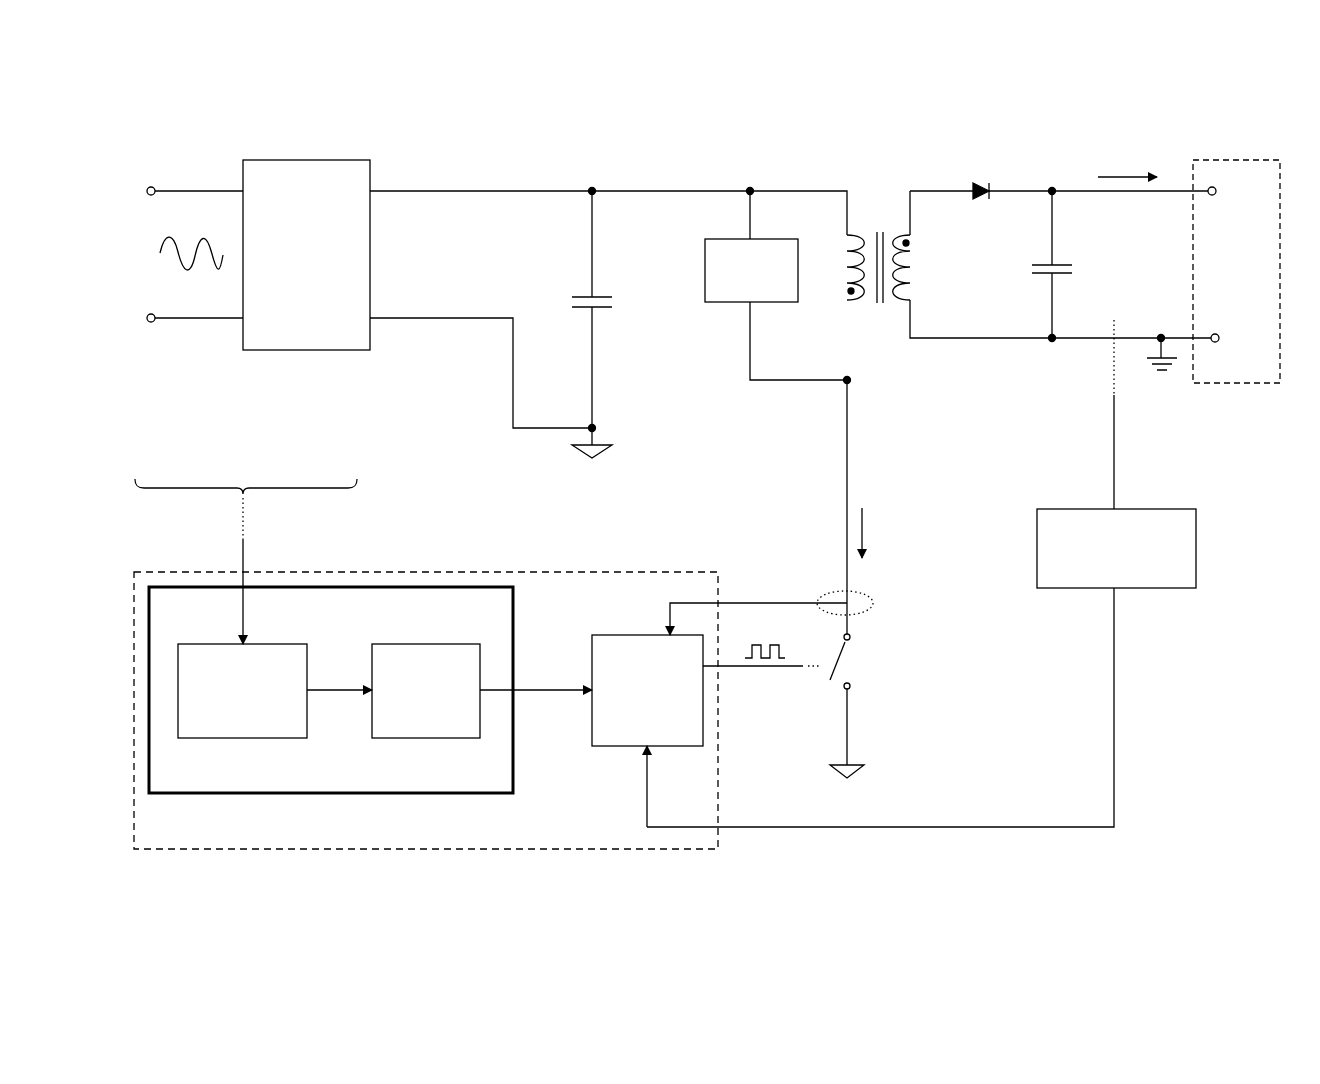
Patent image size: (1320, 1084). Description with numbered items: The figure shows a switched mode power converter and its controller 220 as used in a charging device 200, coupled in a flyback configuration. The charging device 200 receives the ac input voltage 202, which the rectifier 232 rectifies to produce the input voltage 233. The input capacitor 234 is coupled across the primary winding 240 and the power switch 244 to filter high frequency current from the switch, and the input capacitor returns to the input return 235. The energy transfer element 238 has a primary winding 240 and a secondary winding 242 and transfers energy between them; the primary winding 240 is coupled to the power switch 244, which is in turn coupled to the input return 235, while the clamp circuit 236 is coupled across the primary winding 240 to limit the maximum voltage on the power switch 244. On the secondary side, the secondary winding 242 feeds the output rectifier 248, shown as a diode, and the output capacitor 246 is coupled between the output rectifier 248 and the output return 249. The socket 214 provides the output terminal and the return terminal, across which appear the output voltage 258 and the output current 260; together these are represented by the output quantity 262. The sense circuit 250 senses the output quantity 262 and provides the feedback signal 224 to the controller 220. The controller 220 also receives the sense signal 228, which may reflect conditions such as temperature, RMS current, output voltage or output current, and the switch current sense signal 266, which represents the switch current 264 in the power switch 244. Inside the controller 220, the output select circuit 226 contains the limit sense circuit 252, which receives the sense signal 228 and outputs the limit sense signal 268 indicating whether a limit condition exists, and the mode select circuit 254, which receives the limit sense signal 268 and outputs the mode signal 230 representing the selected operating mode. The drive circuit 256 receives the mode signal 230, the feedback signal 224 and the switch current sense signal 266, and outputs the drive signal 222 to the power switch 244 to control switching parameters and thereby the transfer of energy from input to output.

The charging device 200 is at (801, 107).
The ac input voltage V_AC 202 is at (130, 232).
The socket 214 is at (1256, 152).
The controller 220 is at (364, 854).
The drive signal U_DRIVE 222 is at (778, 724).
The feedback signal U_FB 224 is at (1172, 692).
The output select circuit 226 is at (378, 586).
The sense signal U_SENSE 228 is at (146, 534).
The mode signal U_M 230 is at (542, 700).
The rectifier 232 is at (288, 152).
The input voltage V_IN 233 is at (439, 256).
The input capacitor C_IN 234 is at (638, 287).
The input return 235 is at (612, 437).
The clamp circuit 236 is at (768, 310).
The energy transfer element T1 238 is at (878, 330).
The primary winding 240 is at (856, 264).
The secondary winding 242 is at (906, 272).
The power switch S1 244 is at (880, 648).
The output capacitor C1 246 is at (1023, 284).
The output rectifier D1 248 is at (976, 172).
The output return 249 is at (1165, 376).
The sense circuit 250 is at (1199, 546).
The limit sense circuit 252 is at (278, 638).
The mode select circuit 254 is at (430, 638).
The drive circuit 256 is at (632, 630).
The output voltage V_O 258 is at (1100, 250).
The output current I_O 260 is at (1122, 140).
The output quantity U_O 262 is at (1066, 412).
The switch current I_D 264 is at (885, 512).
The switch current sense signal 266 is at (775, 540).
The limit sense signal U_LS 268 is at (338, 700).